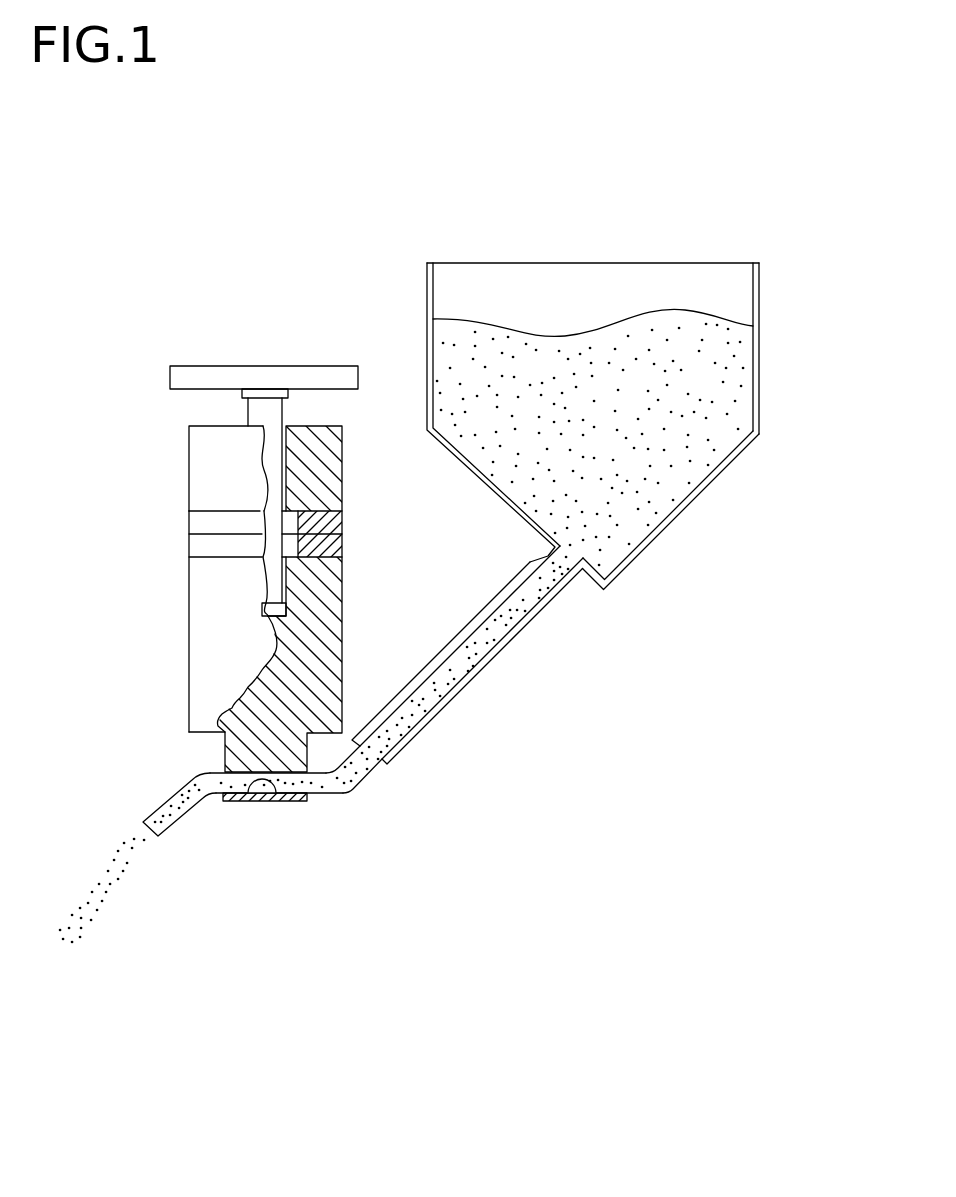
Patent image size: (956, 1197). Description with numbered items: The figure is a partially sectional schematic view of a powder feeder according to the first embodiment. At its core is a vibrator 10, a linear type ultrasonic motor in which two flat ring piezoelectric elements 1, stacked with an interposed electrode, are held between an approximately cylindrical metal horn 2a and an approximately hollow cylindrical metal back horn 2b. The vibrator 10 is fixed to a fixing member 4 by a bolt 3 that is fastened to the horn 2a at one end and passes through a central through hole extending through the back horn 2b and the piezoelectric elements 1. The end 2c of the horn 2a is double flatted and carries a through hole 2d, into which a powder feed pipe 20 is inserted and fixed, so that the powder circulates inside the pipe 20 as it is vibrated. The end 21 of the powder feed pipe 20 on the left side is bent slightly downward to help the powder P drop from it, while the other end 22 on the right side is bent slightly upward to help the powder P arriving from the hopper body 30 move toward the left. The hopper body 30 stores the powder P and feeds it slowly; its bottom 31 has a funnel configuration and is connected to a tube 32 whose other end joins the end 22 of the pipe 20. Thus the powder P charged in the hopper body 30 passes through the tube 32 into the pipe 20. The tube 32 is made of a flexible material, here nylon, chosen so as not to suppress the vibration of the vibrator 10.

The piezoelectric element 1 is at (193, 523).
The horn 2a is at (208, 622).
The back horn 2b is at (197, 450).
The end of the horn 2c is at (223, 757).
The through hole 2d is at (277, 803).
The bolt 3 is at (277, 420).
The fixing member 4 is at (240, 372).
The vibrator 10 is at (188, 587).
The powder feed pipe 20 is at (330, 795).
The end of the powder feed pipe 21 is at (167, 830).
The other end of the pipe 22 is at (352, 782).
The hopper body 30 is at (760, 283).
The bottom 31 is at (668, 517).
The tube 32 is at (448, 693).
The powder P is at (593, 340).